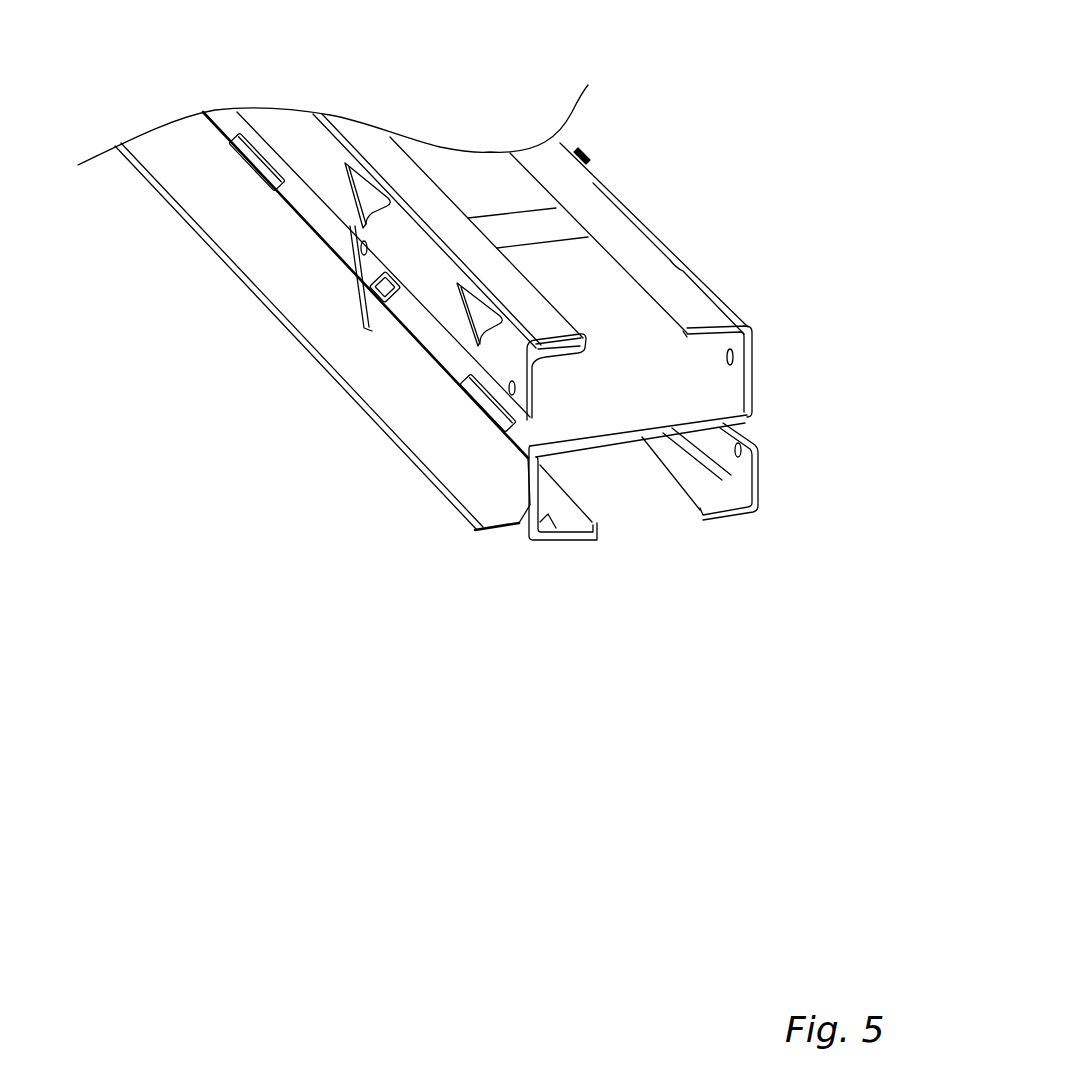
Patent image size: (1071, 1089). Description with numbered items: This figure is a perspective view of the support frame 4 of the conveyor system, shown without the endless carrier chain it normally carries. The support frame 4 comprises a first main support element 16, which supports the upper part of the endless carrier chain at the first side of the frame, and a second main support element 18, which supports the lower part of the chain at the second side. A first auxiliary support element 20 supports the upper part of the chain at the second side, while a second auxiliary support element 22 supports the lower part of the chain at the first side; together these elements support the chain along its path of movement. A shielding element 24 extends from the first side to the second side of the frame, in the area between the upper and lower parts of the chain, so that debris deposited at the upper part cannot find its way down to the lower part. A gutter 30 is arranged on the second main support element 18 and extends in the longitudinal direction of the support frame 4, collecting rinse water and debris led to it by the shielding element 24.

The support frame 4 is at (637, 118).
The first main support element 16 is at (758, 343).
The second main support element 18 is at (521, 525).
The first auxiliary support element 20 is at (428, 277).
The second auxiliary support element 22 is at (765, 500).
The shielding element 24 is at (605, 413).
The gutter 30 is at (483, 503).